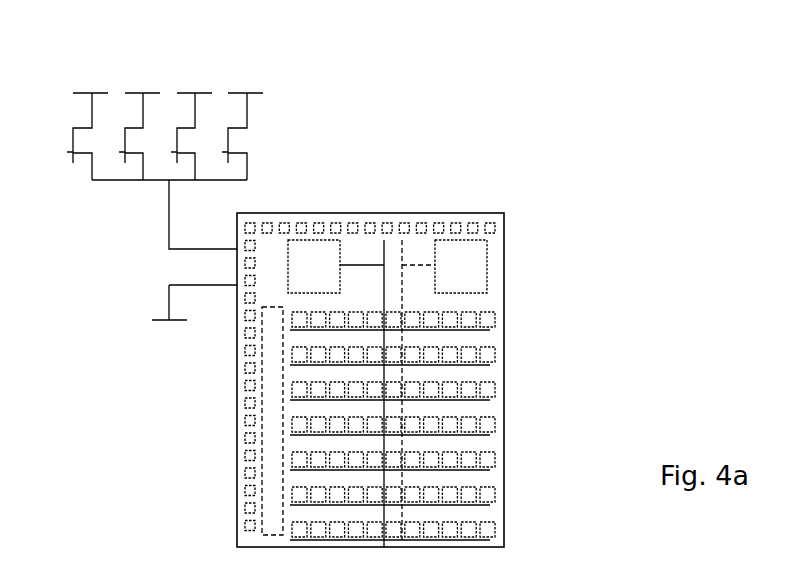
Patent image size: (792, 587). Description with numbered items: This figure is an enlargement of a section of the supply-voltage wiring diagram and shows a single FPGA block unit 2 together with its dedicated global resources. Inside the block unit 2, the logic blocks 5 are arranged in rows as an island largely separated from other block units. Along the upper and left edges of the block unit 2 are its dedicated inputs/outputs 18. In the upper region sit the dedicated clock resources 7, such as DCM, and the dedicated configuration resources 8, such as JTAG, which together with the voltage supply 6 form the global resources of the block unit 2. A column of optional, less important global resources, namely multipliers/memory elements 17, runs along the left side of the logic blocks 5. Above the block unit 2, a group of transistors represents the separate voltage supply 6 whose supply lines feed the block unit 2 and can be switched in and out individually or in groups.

The FPGA block unit 2 is at (504, 312).
The logic block 5 is at (490, 423).
The voltage supply 6 is at (242, 92).
The clock resources 7 is at (313, 257).
The configuration resources 8 is at (462, 257).
The multipliers/memory elements 17 is at (272, 517).
The inputs/outputs 18 is at (245, 473).